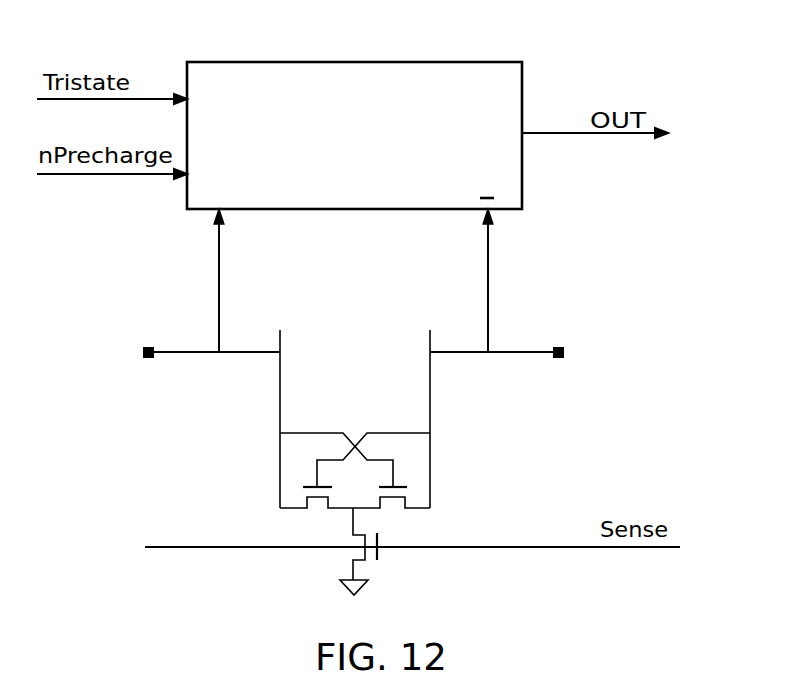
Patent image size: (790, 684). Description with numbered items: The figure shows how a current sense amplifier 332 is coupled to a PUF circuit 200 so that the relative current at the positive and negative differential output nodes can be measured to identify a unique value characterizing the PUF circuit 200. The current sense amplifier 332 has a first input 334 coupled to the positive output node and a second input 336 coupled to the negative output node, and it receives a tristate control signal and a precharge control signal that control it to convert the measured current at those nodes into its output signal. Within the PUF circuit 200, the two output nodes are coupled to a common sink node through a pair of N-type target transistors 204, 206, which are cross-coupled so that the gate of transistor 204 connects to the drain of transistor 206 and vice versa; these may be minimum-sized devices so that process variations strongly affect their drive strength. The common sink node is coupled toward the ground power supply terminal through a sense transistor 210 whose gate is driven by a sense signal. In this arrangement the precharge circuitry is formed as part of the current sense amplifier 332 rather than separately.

The current sense amplifier 332 is at (353, 61).
The input 334 is at (212, 217).
The input 336 is at (480, 217).
The PUF circuit 200 is at (580, 228).
The transistor 204 is at (303, 488).
The transistor 206 is at (407, 487).
The sense transistor 210 is at (371, 560).